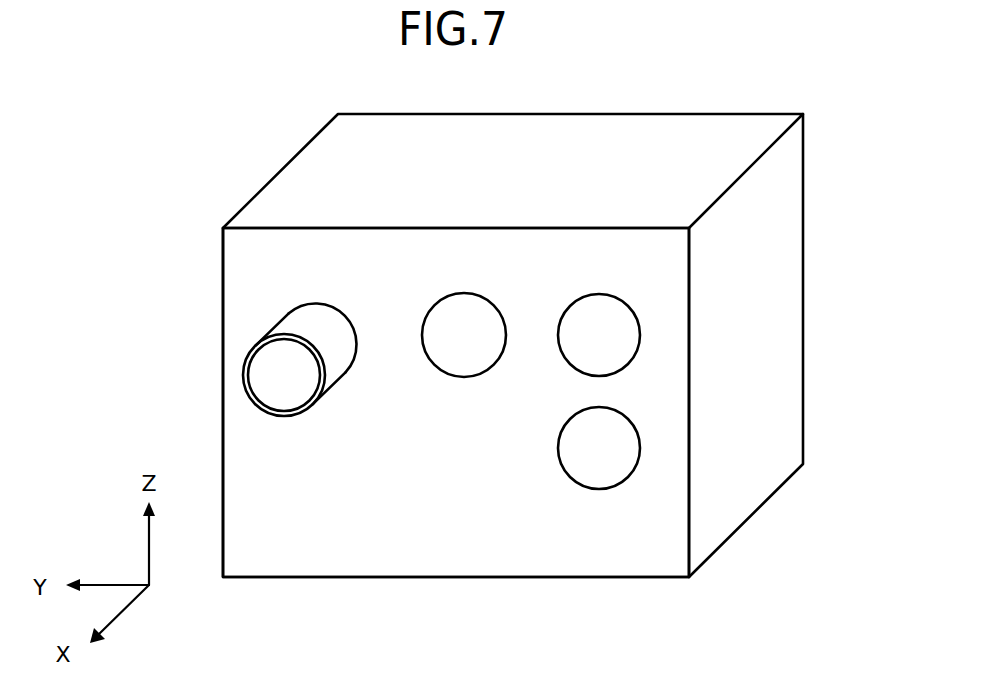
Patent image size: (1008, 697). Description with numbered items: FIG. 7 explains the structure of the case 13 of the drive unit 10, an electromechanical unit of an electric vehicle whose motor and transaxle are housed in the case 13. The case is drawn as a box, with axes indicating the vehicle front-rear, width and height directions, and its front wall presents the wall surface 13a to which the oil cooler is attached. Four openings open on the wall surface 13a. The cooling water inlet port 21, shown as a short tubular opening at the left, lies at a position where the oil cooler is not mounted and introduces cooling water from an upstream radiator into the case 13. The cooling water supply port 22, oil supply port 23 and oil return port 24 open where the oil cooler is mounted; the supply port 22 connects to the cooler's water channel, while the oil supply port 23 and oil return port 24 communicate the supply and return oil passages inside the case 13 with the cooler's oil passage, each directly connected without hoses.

The drive unit 10 is at (508, 317).
The case 13 is at (787, 250).
The wall surface 13a is at (245, 270).
The cooling water inlet port 21 is at (250, 357).
The cooling water supply port 22 is at (450, 372).
The oil supply port 23 is at (633, 358).
The oil return port 24 is at (633, 471).